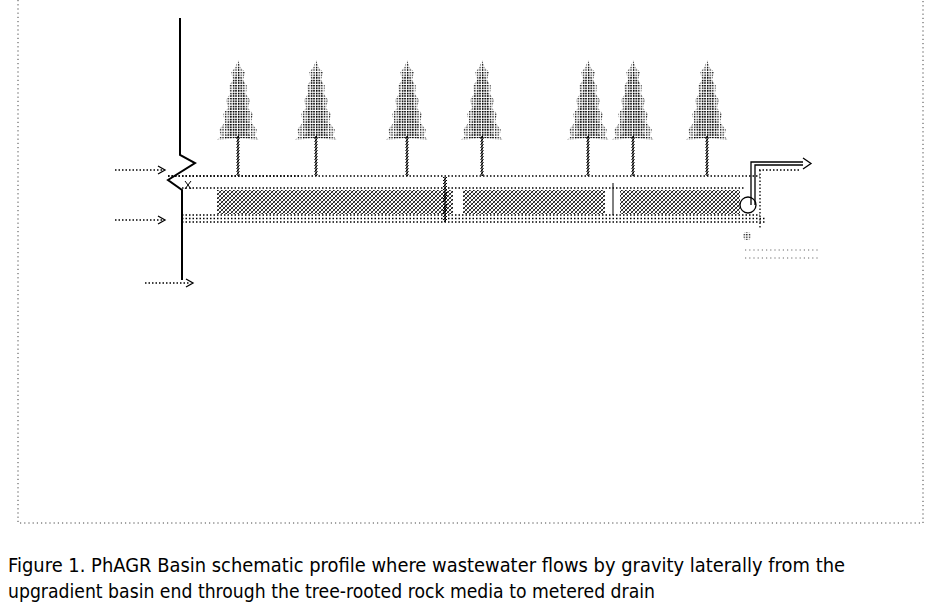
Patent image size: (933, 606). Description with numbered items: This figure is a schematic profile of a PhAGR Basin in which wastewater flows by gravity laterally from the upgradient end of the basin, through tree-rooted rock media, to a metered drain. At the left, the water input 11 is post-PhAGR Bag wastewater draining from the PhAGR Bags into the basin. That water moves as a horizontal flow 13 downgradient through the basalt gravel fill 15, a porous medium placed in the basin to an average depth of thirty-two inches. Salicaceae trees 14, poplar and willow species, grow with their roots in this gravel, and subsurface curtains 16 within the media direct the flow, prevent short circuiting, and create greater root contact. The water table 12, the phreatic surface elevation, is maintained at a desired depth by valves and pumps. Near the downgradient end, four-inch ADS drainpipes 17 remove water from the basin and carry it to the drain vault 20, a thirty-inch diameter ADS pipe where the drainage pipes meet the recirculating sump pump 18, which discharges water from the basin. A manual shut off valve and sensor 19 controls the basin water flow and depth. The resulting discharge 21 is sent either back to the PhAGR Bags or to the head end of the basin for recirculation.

The water input 11 is at (108, 160).
The water table 12 is at (178, 186).
The horizontal flow 13 is at (97, 212).
The Salicaceae trees 14 is at (472, 105).
The basalt gravel fill 15 is at (210, 205).
The subsurface curtains 16 is at (300, 196).
The ADS drainpipes 17 is at (716, 225).
The recirculating sump pump 18 is at (742, 213).
The manual shut off valve and sensor 19 is at (745, 241).
The drain vault 20 is at (770, 155).
The discharge 21 is at (863, 182).